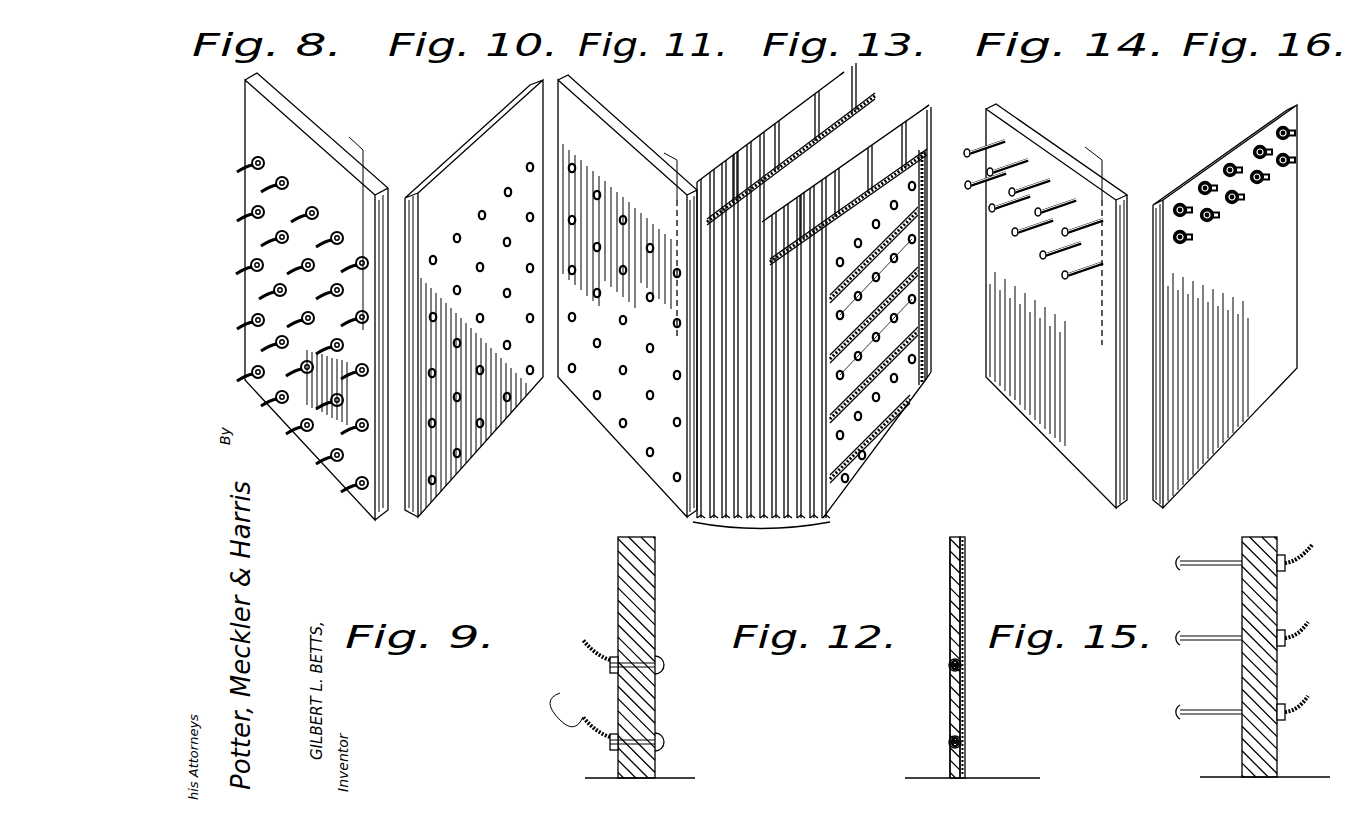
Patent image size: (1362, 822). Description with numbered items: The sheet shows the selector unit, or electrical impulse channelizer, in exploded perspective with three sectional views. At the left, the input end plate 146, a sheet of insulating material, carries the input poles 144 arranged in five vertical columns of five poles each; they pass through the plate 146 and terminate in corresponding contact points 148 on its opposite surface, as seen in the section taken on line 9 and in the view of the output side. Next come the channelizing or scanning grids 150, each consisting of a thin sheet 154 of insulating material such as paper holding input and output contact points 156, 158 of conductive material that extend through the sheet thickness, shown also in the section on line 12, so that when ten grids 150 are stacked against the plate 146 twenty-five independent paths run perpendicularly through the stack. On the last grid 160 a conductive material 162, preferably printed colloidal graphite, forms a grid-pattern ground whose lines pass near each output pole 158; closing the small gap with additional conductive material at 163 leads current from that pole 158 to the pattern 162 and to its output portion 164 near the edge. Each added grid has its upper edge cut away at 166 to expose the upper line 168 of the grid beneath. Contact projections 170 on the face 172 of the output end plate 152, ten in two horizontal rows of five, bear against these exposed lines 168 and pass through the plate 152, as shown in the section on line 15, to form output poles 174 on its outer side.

In FIG. 8, the section line 9 is at (347, 135).
In FIG. 11, the section line 12 is at (662, 151).
In FIG. 14, the section line 15 is at (1083, 145).
In FIG. 8, the input poles 144 is at (250, 267).
In FIG. 9, the input poles 144 is at (590, 663).
In FIG. 8, the input end plate 146 is at (332, 113).
In FIG. 10, the input end plate 146 is at (475, 137).
In FIG. 9, the input end plate 146 is at (628, 565).
In FIG. 10, the contact points 148 is at (500, 222).
In FIG. 9, the contact points 148 is at (660, 737).
In FIG. 11, the scanning grids 150 is at (638, 453).
In FIG. 13, the scanning grids 150 is at (775, 518).
In FIG. 12, the scanning grids 150 is at (970, 525).
In FIG. 14, the output end plate 152 is at (1047, 440).
In FIG. 16, the output end plate 152 is at (1207, 448).
In FIG. 15, the output end plate 152 is at (1278, 522).
In FIG. 13, the thin sheets 154 is at (848, 478).
In FIG. 12, the thin sheets 154 is at (950, 592).
In FIG. 11, the input contact points 156 is at (596, 394).
In FIG. 12, the input contact points 156 is at (943, 742).
In FIG. 13, the output contact points 158 is at (862, 435).
In FIG. 12, the output contact points 158 is at (962, 668).
In FIG. 13, the last grid 160 is at (887, 412).
In FIG. 13, the conductive material 162 is at (920, 352).
In FIG. 12, the conductive material 162 is at (965, 567).
In FIG. 13, the additional conductive material 163 is at (910, 377).
In FIG. 13, the output portion 164 is at (929, 116).
In FIG. 13, the cut away edge portion 166 is at (897, 113).
In FIG. 13, the upper line 168 is at (797, 137).
In FIG. 14, the contact projections 170 is at (1038, 177).
In FIG. 15, the contact projections 170 is at (1217, 582).
In FIG. 14, the face 172 is at (1093, 468).
In FIG. 16, the output poles 174 is at (1203, 182).
In FIG. 15, the output poles 174 is at (1327, 588).